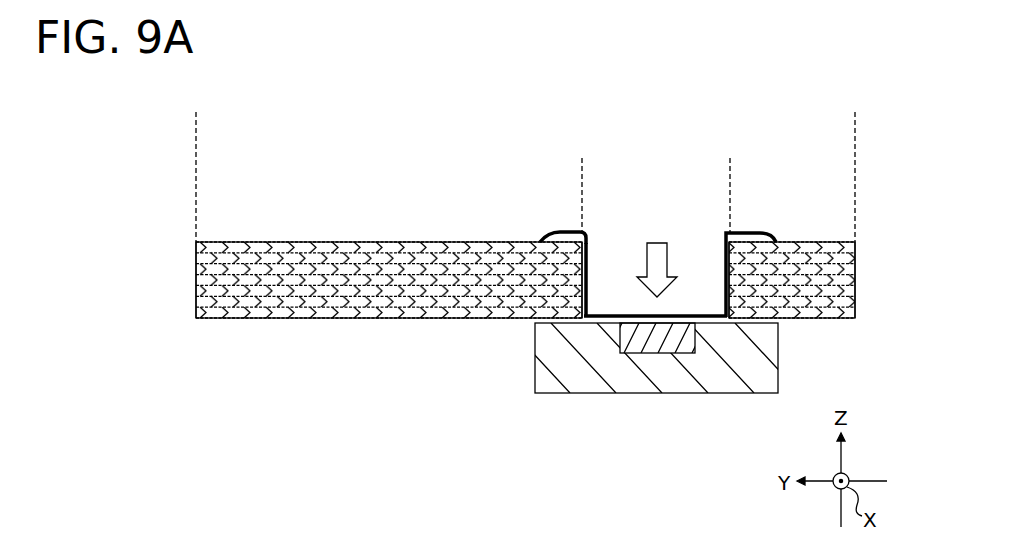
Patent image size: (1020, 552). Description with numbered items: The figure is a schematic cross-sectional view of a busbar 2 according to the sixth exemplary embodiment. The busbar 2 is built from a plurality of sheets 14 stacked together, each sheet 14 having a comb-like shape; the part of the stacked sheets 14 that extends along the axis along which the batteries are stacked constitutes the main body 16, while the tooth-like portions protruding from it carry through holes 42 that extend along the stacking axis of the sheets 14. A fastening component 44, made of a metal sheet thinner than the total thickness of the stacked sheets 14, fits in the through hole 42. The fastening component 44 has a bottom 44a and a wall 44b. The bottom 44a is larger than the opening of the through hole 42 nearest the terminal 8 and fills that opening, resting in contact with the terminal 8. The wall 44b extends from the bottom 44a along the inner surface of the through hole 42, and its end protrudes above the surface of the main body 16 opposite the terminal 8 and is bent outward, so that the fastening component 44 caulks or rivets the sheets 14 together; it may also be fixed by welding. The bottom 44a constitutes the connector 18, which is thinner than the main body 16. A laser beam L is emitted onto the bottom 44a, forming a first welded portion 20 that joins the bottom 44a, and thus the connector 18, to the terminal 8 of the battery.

The busbar 2 is at (855, 128).
The main body 16 is at (578, 174).
The connector 18 is at (730, 174).
The sheet 14 is at (196, 290).
The fastening component 44 is at (546, 231).
The bottom 44a is at (601, 315).
The wall 44b is at (592, 240).
The through hole 42 is at (727, 257).
The terminal 8 is at (778, 358).
The first welded portion 20 is at (665, 353).
The laser beam L is at (667, 255).